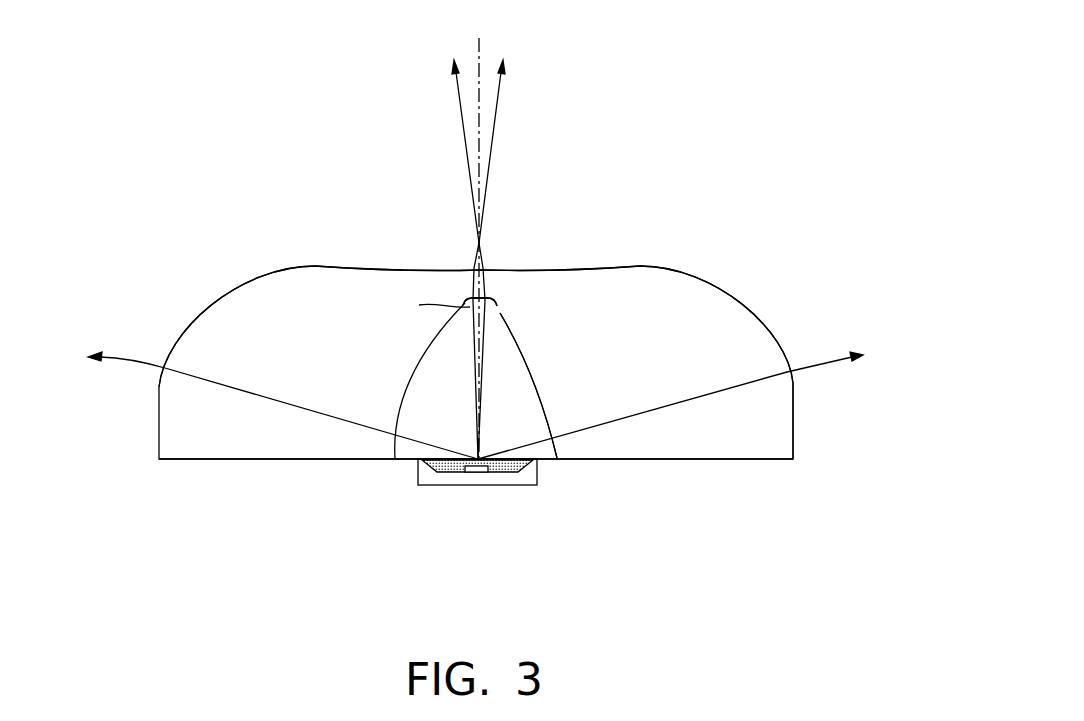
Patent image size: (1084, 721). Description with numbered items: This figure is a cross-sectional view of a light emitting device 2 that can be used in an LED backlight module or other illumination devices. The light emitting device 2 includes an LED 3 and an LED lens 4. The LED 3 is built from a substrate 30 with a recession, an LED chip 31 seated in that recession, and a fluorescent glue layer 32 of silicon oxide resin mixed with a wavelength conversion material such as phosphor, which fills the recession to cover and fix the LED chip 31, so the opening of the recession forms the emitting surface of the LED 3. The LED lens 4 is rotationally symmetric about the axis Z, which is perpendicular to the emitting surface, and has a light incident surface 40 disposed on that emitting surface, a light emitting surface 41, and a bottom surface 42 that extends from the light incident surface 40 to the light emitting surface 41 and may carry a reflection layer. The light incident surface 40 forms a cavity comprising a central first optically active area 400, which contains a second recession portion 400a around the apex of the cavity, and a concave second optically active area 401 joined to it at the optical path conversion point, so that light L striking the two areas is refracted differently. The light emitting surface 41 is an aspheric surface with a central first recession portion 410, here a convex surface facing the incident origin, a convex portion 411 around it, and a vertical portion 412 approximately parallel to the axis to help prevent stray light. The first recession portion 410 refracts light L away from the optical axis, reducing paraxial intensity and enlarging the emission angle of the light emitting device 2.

The light emitting device 2 is at (711, 169).
The LED 3 is at (475, 530).
The substrate 30 is at (435, 482).
The LED chip 31 is at (477, 509).
The fluorescent glue layer 32 is at (507, 475).
The LED lens 4 is at (743, 340).
The light incident surface 40 is at (573, 277).
The first optically active area 400 is at (490, 298).
The second recession portion 400a is at (475, 310).
The second optically active area 401 is at (506, 311).
The light emitting surface 41 is at (702, 280).
The first recession portion 410 is at (633, 253).
The convex portion 411 is at (304, 256).
The vertical portion 412 is at (801, 383).
The bottom surface 42 is at (683, 462).